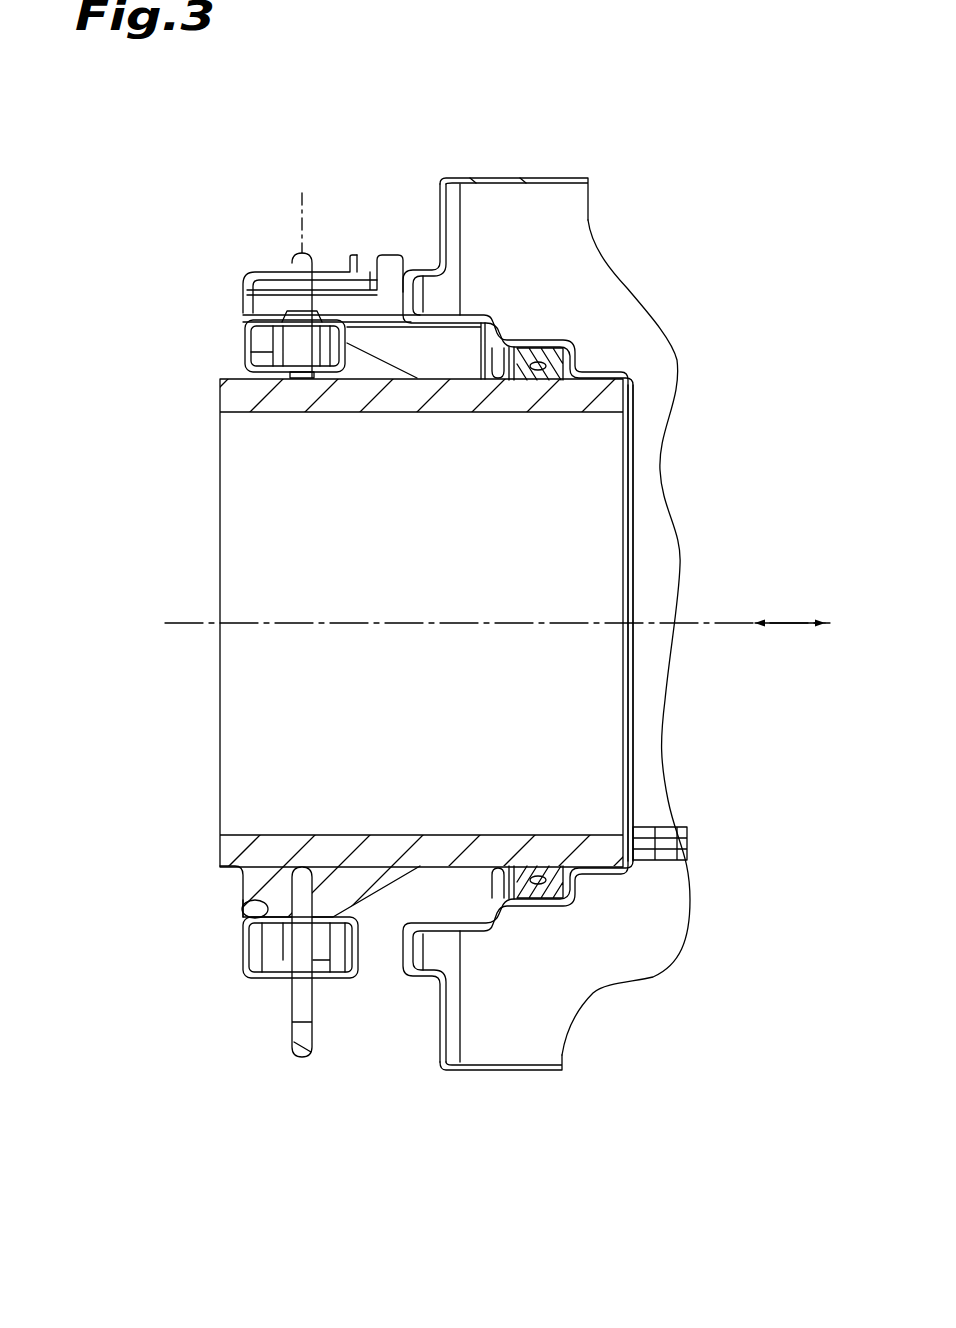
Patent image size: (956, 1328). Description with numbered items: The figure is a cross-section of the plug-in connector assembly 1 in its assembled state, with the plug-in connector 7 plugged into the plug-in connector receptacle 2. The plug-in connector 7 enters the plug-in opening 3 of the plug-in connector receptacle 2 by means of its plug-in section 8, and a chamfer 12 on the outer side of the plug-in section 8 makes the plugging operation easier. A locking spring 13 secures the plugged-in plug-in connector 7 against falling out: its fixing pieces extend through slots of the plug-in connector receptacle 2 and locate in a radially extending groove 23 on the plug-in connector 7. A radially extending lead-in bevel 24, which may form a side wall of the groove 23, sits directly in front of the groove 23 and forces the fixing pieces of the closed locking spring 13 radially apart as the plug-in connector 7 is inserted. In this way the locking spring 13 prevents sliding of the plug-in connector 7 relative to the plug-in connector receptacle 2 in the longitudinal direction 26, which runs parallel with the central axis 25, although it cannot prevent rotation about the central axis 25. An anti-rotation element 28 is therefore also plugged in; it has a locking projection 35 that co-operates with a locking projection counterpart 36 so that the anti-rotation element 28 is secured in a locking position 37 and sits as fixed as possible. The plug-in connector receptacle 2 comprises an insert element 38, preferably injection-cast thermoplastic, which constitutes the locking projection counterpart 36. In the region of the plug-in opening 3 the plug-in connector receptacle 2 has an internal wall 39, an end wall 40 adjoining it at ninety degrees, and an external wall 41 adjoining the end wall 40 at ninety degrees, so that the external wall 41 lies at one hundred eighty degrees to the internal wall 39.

The plug-in connector assembly 1 is at (170, 203).
The plug-in connector receptacle 2 is at (525, 175).
The plug-in opening 3 is at (217, 920).
The plug-in connector 7 is at (237, 397).
The plug-in section 8 is at (445, 887).
The chamfer 12 is at (600, 864).
The locking spring 13 is at (305, 1057).
The groove 23 is at (260, 973).
The lead-in bevel 24 is at (380, 897).
The central axis 25 is at (720, 620).
The longitudinal direction 26 is at (797, 620).
The anti-rotation element 28 is at (252, 342).
The locking projection 35 is at (294, 316).
The locking projection counterpart 36 is at (315, 318).
The locking position 37 is at (300, 207).
The insert element 38 is at (270, 302).
The internal wall 39 is at (243, 905).
The end wall 40 is at (247, 950).
The external wall 41 is at (277, 973).